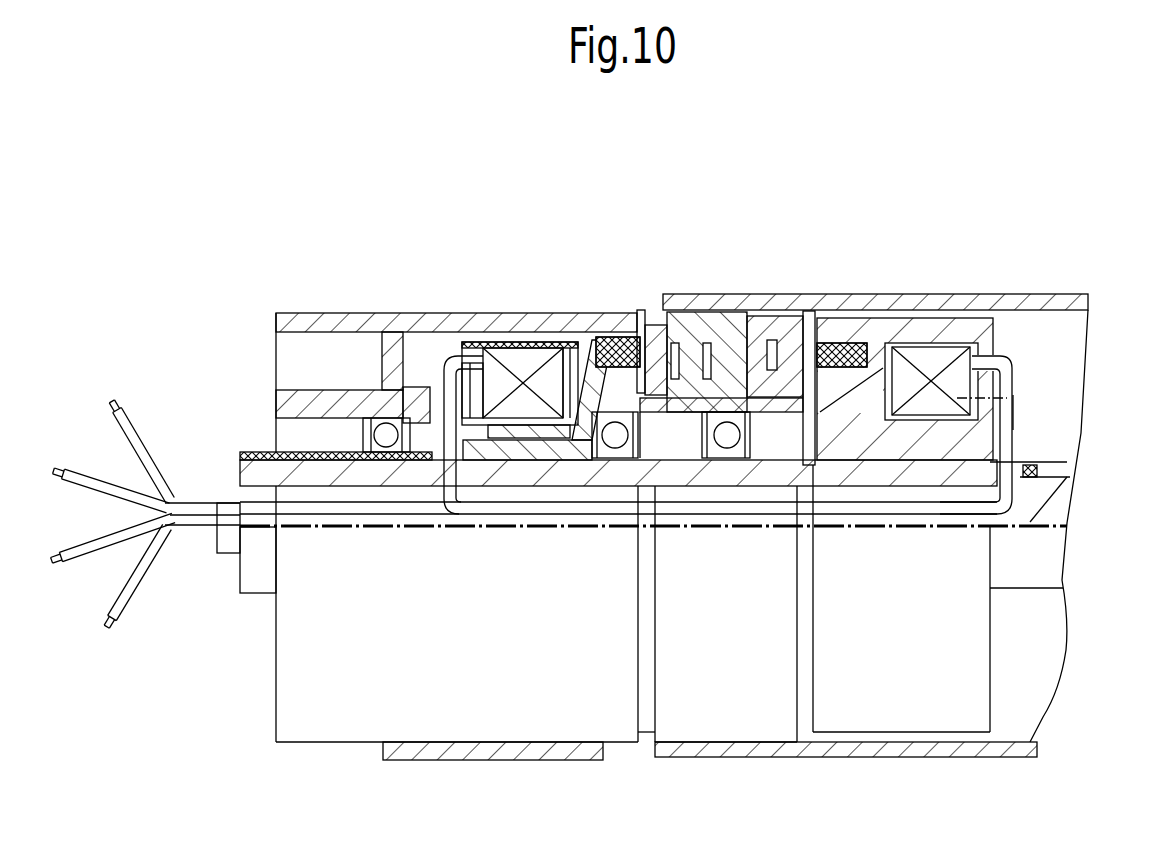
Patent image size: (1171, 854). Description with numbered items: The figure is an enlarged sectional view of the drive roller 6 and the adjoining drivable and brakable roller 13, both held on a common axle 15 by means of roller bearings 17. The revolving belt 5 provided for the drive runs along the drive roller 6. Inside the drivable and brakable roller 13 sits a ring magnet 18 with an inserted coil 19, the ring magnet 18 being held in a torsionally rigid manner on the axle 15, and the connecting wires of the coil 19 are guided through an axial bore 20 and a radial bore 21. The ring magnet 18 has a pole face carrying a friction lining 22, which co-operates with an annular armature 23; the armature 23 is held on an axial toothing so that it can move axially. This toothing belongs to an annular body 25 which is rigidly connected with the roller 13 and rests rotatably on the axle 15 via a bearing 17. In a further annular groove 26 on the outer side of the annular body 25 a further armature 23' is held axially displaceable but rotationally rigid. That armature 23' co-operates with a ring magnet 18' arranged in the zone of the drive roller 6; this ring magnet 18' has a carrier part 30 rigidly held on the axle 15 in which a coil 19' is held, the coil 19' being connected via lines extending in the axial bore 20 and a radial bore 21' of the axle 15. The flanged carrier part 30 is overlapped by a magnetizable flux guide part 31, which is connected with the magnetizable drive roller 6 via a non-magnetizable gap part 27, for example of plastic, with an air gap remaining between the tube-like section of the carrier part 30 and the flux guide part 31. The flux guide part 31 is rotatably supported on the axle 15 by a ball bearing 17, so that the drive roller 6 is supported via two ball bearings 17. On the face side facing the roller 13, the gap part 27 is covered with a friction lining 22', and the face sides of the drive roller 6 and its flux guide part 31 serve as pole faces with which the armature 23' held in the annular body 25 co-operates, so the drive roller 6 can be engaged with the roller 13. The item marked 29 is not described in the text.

The revolving belt 5 is at (487, 748).
The drive roller 6 is at (428, 325).
The drivable and brakable roller 13 is at (1040, 332).
The axle 15 is at (1030, 551).
The roller bearing 17 is at (386, 440).
The ring magnet 18 is at (905, 335).
The ring magnet 18' is at (520, 471).
The coil 19 is at (949, 315).
The coil 19' is at (523, 314).
The axial bore 20 is at (920, 490).
The radial bore 21 is at (1043, 434).
The radial bore 21' is at (453, 478).
The friction lining 22 is at (848, 289).
The friction lining 22' is at (619, 302).
The annular armature 23 is at (788, 304).
The further armature 23' is at (721, 496).
The annular body 25 is at (745, 352).
The further annular groove 26 is at (705, 360).
The gap part 27 is at (593, 318).
The gap 29 is at (1013, 428).
The carrier part 30 is at (500, 465).
The flux guide part 31 is at (577, 440).